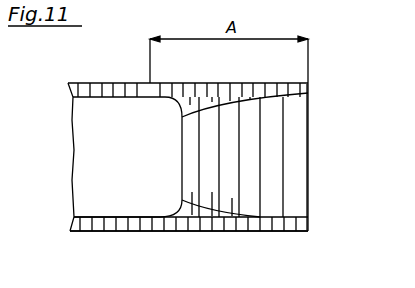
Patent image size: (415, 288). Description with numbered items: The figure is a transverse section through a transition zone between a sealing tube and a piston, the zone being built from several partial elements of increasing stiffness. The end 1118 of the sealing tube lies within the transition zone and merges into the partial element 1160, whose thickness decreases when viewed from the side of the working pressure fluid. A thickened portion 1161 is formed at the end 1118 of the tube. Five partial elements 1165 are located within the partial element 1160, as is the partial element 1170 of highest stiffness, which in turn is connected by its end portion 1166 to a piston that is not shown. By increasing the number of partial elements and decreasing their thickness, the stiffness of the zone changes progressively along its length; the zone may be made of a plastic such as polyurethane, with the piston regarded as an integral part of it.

The end of the sealing tube 1118 is at (113, 232).
The partial element 1160 is at (260, 223).
The thickened portion 1161 is at (188, 103).
The partial elements 1165 is at (232, 217).
The end portion 1166 is at (308, 143).
The partial element of highest stiffness 1170 is at (297, 207).